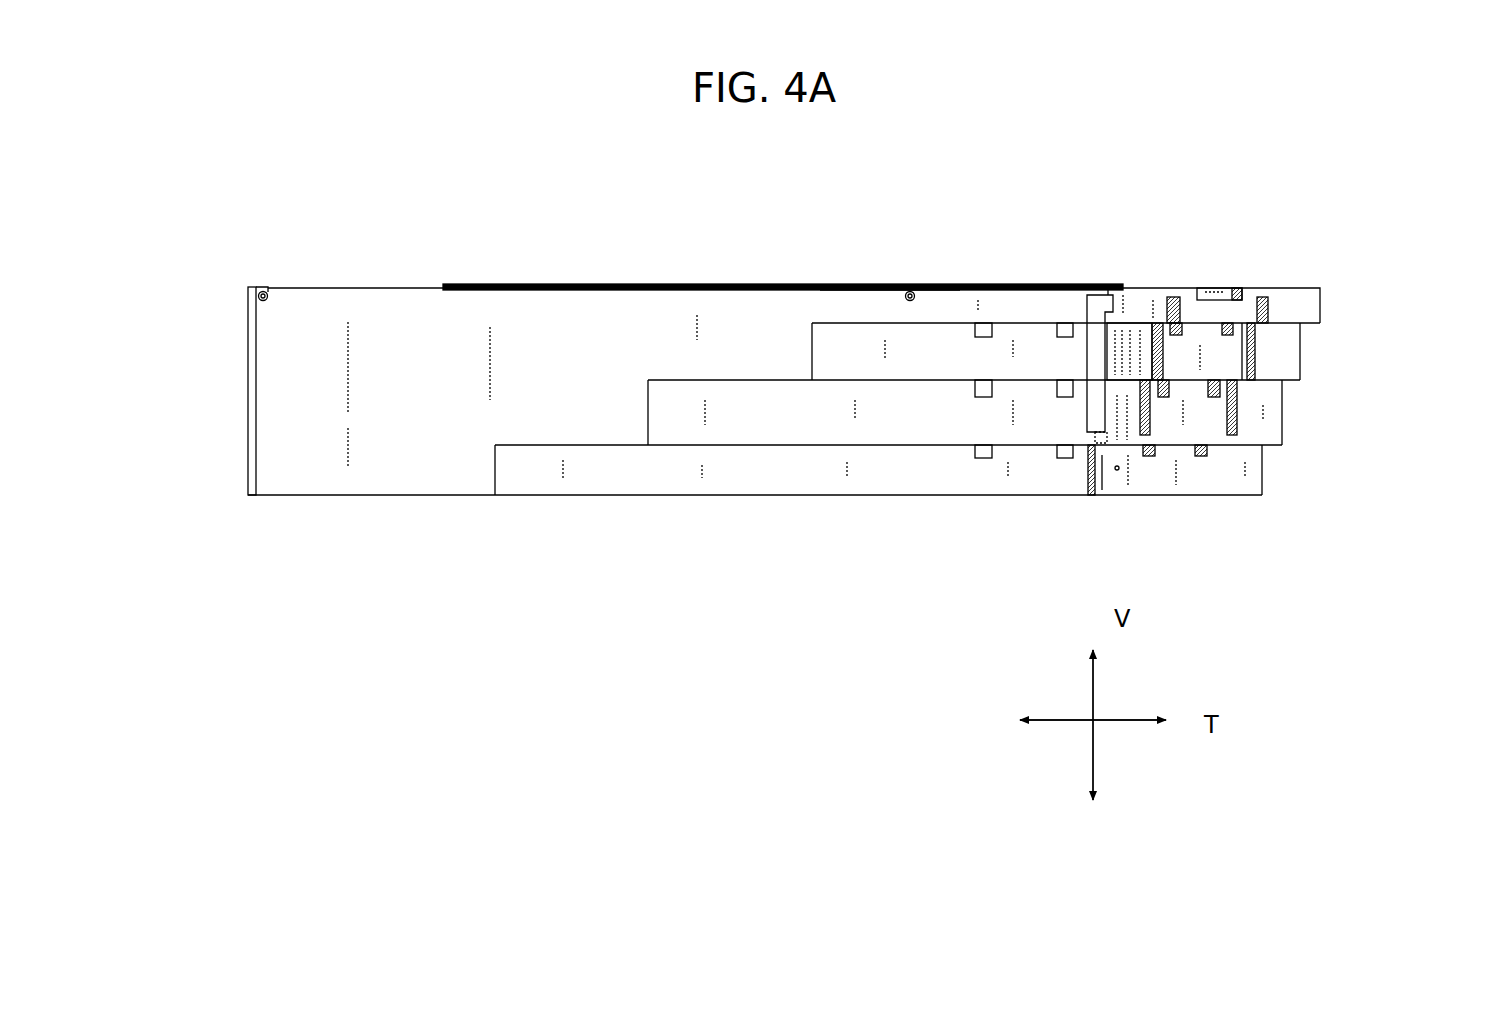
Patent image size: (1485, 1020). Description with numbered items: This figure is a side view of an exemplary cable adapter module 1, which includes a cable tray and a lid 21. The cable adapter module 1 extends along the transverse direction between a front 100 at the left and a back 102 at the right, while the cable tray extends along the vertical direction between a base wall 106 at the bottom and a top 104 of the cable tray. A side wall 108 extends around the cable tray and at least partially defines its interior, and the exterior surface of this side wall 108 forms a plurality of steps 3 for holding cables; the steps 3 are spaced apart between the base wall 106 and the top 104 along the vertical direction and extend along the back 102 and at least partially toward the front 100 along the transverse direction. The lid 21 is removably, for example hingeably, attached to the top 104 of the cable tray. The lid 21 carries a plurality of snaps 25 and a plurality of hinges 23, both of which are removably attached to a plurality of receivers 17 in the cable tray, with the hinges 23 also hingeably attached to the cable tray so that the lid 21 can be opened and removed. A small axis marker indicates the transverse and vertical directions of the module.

The cable adapter module 1 is at (1064, 202).
The steps 3 is at (636, 475).
The receivers 17 is at (270, 310).
The lid 21 is at (675, 284).
The hinges 23 is at (279, 281).
The snaps 25 is at (895, 268).
The front 100 is at (214, 370).
The back 102 is at (1338, 452).
The top 104 is at (1285, 287).
The base wall 106 is at (450, 497).
The side wall 108 is at (432, 396).